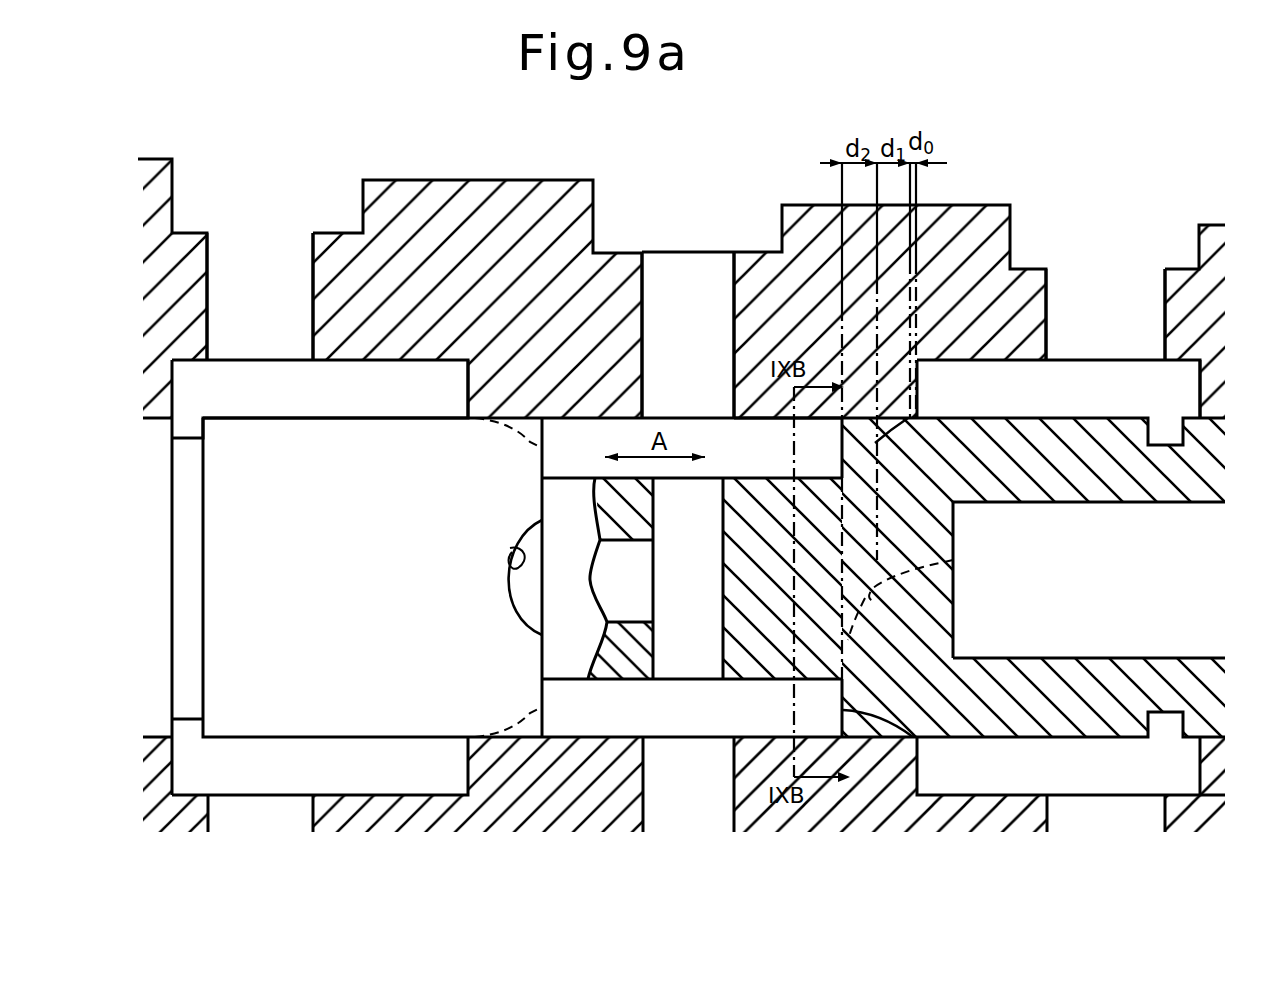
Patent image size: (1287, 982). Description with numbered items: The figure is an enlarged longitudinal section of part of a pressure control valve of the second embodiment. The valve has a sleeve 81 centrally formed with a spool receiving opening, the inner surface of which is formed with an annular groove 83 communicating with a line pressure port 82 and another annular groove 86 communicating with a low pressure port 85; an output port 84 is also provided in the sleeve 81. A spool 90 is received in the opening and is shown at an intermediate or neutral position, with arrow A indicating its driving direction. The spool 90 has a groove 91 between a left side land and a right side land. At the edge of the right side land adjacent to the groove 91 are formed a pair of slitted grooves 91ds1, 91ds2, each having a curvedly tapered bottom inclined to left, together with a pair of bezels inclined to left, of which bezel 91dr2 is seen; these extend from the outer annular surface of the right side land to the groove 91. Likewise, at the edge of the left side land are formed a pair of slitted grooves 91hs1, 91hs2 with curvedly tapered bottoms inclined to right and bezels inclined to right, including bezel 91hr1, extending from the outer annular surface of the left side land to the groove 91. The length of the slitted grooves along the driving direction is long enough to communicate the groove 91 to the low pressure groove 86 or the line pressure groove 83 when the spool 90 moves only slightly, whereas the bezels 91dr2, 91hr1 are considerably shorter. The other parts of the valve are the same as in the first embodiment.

The sleeve 81 is at (630, 248).
The line pressure port 82 is at (263, 278).
The annular groove 83 is at (340, 395).
The output port 84 is at (702, 277).
The low pressure port 85 is at (1107, 283).
The annular groove 86 is at (1023, 397).
The spool 90 is at (618, 686).
The groove 91 is at (778, 681).
The slitted groove 91ds1 is at (875, 443).
The slitted groove 91ds2 is at (877, 722).
The bezel 91dr2 is at (953, 558).
The slitted groove 91hs1 is at (522, 447).
The slitted groove 91hs2 is at (522, 708).
The bezel 91hr1 is at (510, 548).